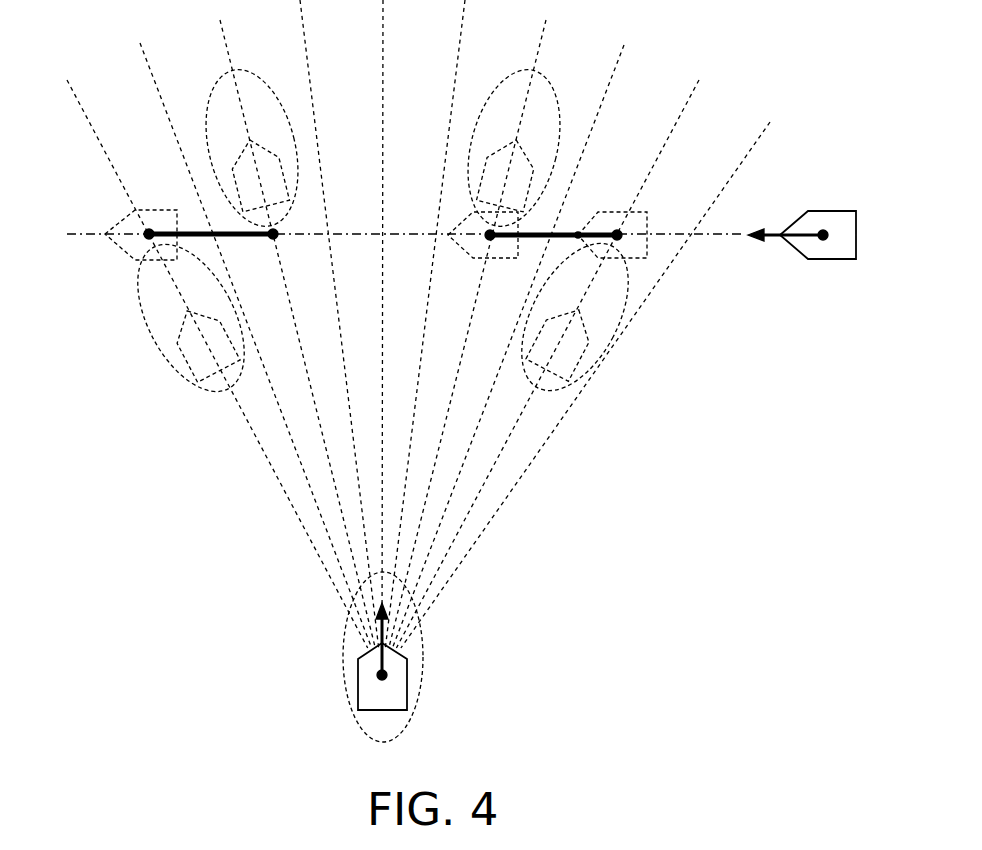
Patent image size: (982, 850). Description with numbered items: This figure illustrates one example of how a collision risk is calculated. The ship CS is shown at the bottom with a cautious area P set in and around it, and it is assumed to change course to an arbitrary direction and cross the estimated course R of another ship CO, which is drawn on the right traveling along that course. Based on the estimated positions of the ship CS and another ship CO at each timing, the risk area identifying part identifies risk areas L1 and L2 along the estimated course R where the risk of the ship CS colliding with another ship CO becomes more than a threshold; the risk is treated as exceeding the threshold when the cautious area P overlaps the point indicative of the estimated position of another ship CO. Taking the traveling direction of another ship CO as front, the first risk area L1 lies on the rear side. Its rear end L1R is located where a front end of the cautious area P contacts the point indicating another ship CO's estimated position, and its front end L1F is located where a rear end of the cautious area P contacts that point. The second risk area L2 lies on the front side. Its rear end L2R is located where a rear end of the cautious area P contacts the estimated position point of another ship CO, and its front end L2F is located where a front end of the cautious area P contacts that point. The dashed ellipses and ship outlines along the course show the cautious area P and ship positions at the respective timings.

The estimated course R is at (82, 232).
The front end of the second risk area L2F is at (150, 230).
The rear end of the second risk area L2R is at (276, 238).
The second risk area L2 is at (223, 240).
The front end of the first risk area L1F is at (488, 240).
The rear end of the first risk area L1R is at (619, 233).
The first risk area L1 is at (578, 233).
The another ship CO is at (830, 211).
The cautious area P is at (423, 658).
The ship CS is at (358, 685).